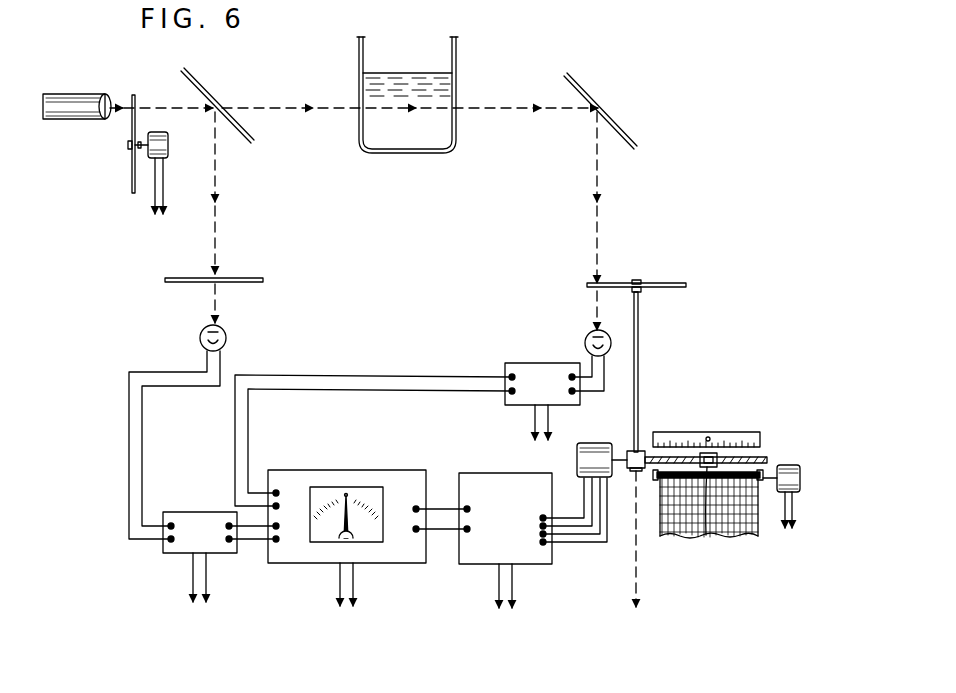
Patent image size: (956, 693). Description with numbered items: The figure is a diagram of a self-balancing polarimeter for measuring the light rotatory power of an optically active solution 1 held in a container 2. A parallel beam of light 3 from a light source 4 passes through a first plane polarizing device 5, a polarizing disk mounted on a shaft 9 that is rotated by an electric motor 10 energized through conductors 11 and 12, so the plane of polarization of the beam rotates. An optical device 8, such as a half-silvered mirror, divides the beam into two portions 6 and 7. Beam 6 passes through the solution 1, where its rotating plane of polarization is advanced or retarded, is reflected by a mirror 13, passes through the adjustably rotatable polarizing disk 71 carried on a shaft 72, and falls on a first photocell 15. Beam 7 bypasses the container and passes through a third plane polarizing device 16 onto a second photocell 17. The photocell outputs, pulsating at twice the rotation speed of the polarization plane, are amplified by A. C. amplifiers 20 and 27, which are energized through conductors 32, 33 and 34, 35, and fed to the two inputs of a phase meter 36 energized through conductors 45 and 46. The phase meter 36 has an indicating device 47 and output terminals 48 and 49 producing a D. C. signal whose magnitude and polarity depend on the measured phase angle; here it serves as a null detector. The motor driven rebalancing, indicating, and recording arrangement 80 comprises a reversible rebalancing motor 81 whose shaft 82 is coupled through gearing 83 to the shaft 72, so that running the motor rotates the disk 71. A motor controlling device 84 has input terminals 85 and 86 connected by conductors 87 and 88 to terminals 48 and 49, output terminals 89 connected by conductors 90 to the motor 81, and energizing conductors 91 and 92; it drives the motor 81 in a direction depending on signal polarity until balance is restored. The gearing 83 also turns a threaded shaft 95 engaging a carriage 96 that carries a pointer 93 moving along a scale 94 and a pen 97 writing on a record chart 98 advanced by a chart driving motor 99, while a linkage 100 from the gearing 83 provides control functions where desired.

The solution 1 is at (437, 130).
The container 2 is at (457, 55).
The parallel beam of light 3 is at (166, 107).
The light source 4 is at (72, 92).
The first plane polarizing device 5 is at (136, 102).
The light beam portion 6 is at (296, 106).
The light beam portion 7 is at (217, 216).
The optical device 8 is at (197, 86).
The shaft 9 is at (140, 142).
The electric motor 10 is at (168, 144).
The energizing conductor 11 is at (153, 208).
The energizing conductor 12 is at (165, 206).
The mirror 13 is at (585, 88).
The first photoelectric device 15 is at (588, 334).
The third plane polarizing device 16 is at (243, 278).
The second photoelectric device 17 is at (224, 330).
The A. C. amplifier 20 is at (540, 362).
The A. C. amplifier 27 is at (190, 511).
The energizing conductor 32 is at (533, 425).
The energizing conductor 33 is at (550, 424).
The energizing conductor 34 is at (191, 578).
The energizing conductor 35 is at (208, 579).
The phase meter 36 is at (347, 470).
The energizing conductor 45 is at (338, 583).
The energizing conductor 46 is at (355, 583).
The indicating device 47 is at (366, 487).
The output terminal 48 is at (415, 506).
The output terminal 49 is at (415, 533).
The adjustably rotatable polarizing disk 71 is at (664, 283).
The shaft 72 is at (644, 338).
The motor driven rebalancing, indicating, and recording arrangement 80 is at (664, 403).
The reversible electrical rebalancing motor 81 is at (598, 442).
The shaft 82 is at (628, 450).
The gearing 83 is at (633, 470).
The motor controlling device 84 is at (512, 472).
The input terminal 85 is at (468, 506).
The input terminal 86 is at (468, 532).
The conductor 87 is at (440, 506).
The conductor 88 is at (440, 532).
The output terminals 89 is at (547, 514).
The conductors 90 is at (581, 553).
The conductor 91 is at (497, 585).
The conductor 92 is at (514, 585).
The pointer 93 is at (703, 452).
The scale 94 is at (709, 436).
The threaded shaft 95 is at (769, 458).
The carriage 96 is at (716, 455).
The pen 97 is at (702, 522).
The record chart 98 is at (732, 516).
The chart driving motor 99 is at (800, 480).
The linkage 100 is at (639, 562).